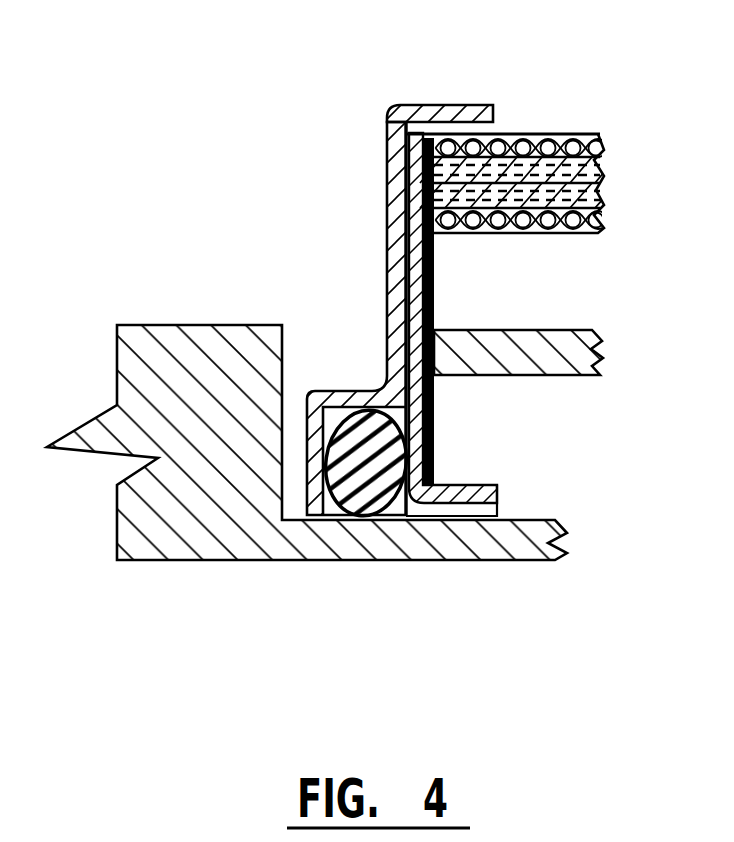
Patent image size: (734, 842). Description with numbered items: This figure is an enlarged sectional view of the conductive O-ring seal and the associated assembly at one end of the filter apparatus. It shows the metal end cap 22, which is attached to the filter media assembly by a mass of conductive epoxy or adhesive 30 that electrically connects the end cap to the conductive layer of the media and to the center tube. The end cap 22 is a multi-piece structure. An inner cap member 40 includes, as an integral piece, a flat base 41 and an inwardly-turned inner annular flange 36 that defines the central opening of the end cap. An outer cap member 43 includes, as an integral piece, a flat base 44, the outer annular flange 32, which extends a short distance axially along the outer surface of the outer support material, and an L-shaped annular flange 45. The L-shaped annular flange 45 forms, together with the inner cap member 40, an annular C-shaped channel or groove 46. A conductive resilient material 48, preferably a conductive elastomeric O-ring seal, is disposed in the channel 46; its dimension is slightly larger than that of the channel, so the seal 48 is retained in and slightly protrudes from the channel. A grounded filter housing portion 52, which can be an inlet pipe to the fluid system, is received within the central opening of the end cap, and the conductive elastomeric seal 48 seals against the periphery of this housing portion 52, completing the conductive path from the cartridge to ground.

The end cap 22 is at (385, 108).
The conductive epoxy or adhesive 30 is at (432, 303).
The outer annular flange 32 is at (450, 112).
The inner annular flange 36 is at (460, 487).
The inner cap member 40 is at (433, 378).
The flat base 41 is at (418, 258).
The outer cap member 43 is at (387, 305).
The flat base 44 is at (387, 183).
The L-shaped annular flange 45 is at (343, 390).
The annular channel 46 is at (329, 511).
The conductive resilient material 48 is at (366, 506).
The filter housing portion 52 is at (133, 560).